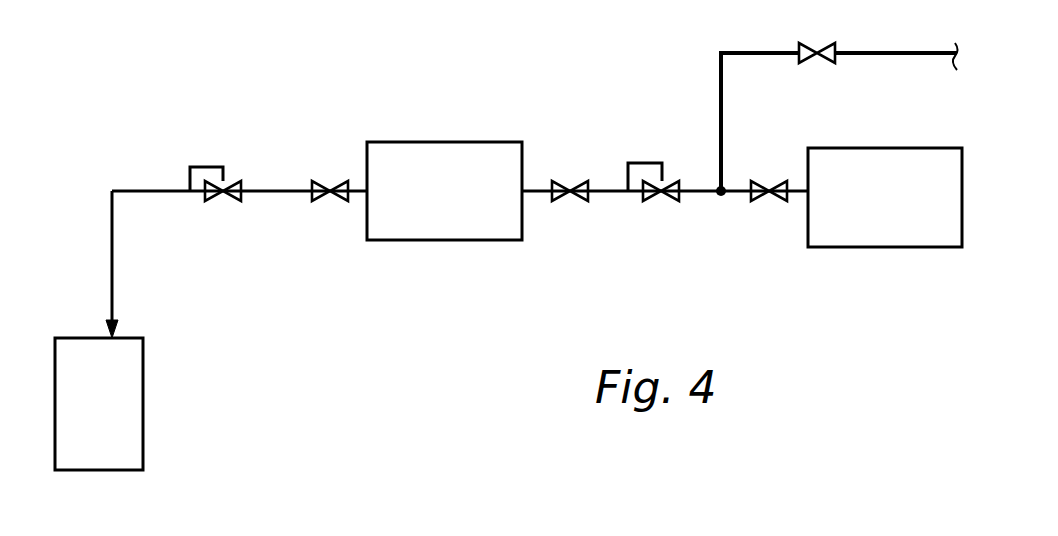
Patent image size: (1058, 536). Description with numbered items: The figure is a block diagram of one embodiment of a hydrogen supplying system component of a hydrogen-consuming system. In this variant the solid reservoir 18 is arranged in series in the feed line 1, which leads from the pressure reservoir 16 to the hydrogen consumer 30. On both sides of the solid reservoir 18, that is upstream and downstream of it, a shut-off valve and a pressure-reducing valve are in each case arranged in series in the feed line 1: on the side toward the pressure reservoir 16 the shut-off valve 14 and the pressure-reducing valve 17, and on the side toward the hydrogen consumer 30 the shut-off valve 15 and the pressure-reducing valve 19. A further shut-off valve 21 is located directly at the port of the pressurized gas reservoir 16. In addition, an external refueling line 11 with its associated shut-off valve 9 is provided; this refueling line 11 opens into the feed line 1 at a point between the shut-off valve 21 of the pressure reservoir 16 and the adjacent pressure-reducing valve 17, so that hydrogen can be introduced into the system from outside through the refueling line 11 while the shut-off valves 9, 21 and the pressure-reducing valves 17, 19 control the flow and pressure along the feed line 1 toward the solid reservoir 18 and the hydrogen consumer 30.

The feed line 1 is at (113, 258).
The shut-off valve 9 is at (815, 50).
The external refueling line 11 is at (870, 53).
The shut-off valve 14 is at (565, 195).
The shut-off valve 15 is at (322, 202).
The pressure reservoir 16 is at (858, 248).
The pressure-reducing valve 17 is at (653, 195).
The solid reservoir 18 is at (460, 243).
The pressure-reducing valve 19 is at (215, 202).
The shut-off valve 21 is at (762, 195).
The hydrogen consumer 30 is at (144, 418).